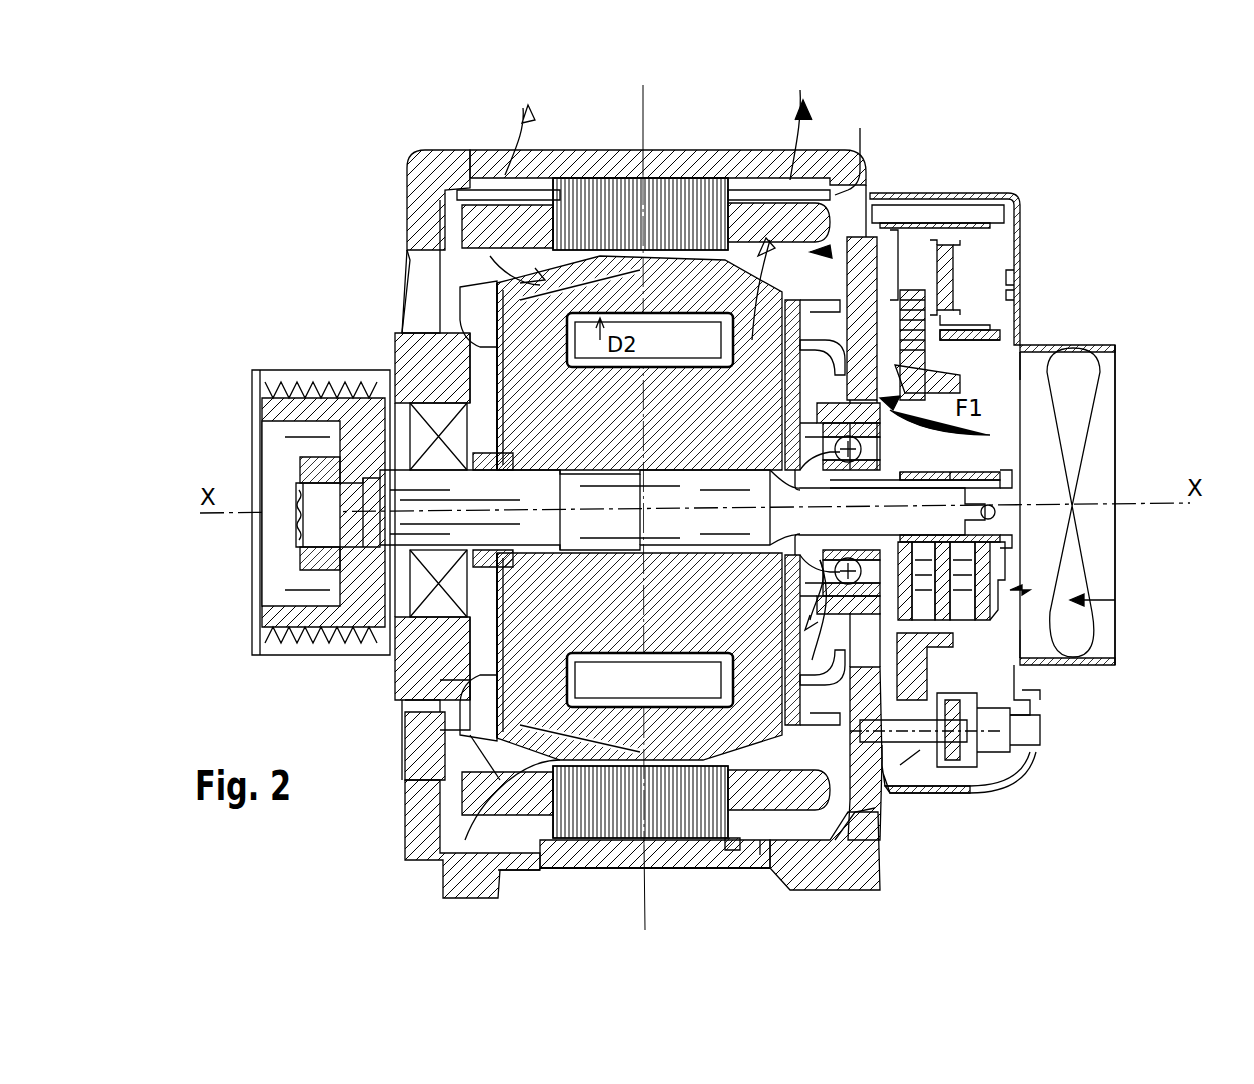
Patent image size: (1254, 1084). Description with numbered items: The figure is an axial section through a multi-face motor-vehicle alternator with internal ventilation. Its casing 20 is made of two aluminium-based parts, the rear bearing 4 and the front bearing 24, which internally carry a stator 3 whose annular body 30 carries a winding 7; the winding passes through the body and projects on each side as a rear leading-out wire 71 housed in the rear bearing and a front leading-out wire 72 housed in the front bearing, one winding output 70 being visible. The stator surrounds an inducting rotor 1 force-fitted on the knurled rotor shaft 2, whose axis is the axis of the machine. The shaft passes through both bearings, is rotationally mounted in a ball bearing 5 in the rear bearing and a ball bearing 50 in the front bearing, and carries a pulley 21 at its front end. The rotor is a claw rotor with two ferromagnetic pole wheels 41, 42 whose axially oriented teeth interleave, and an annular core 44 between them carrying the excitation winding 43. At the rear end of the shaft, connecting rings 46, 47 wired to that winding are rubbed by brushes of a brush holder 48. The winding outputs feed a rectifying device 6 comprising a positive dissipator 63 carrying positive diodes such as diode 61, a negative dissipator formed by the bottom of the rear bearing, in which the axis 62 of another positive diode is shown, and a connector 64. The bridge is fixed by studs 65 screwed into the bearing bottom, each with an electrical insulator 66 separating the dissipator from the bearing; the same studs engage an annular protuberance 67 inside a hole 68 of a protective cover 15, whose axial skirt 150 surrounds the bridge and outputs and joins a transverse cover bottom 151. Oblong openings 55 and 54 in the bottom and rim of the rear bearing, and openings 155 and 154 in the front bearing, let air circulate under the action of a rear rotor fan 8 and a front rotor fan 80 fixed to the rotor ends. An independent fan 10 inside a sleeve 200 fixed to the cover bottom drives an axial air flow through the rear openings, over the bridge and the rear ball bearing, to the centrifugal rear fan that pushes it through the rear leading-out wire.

The inducting rotor 1 is at (500, 818).
The rotor shaft 2 is at (378, 498).
The stator 3 is at (440, 836).
The rear bearing 4 is at (852, 856).
The ball bearing 5 is at (886, 458).
The rectifying device 6 is at (965, 255).
The winding 7 is at (851, 147).
The rear rotor fan 8 is at (812, 345).
The independent fan 10 is at (1110, 580).
The protective cover 15 is at (1030, 772).
The casing 20 is at (395, 189).
The pulley 21 is at (262, 372).
The front bearing 24 is at (405, 722).
The stator body 30 is at (688, 850).
The pole wheel 41 is at (870, 834).
The pole wheel 42 is at (553, 848).
The excitation winding 43 is at (668, 332).
The core 44 is at (733, 853).
The connecting ring 46 is at (925, 474).
The connecting ring 47 is at (992, 472).
The brush holder 48 is at (1000, 612).
The ball bearing 50 is at (412, 420).
The air passage opening 54 is at (797, 178).
The air passage opening 55 is at (925, 378).
The positive diode 61 is at (1015, 312).
The axis of a positive diode 62 is at (884, 285).
The positive dissipator 63 is at (935, 668).
The connector 64 is at (965, 290).
The stud 65 is at (1040, 722).
The electrical insulator 66 is at (942, 784).
The annular protuberance 67 is at (1040, 745).
The hole 68 is at (1036, 700).
The winding output 70 is at (982, 205).
The rear leading-out wire 71 is at (770, 862).
The front leading-out wire 72 is at (520, 853).
The front rotor fan 80 is at (462, 700).
The skirt 150 is at (890, 193).
The cover bottom 151 is at (1030, 215).
The air passage opening 154 is at (483, 150).
The air passage opening 155 is at (408, 262).
The sleeve 200 is at (1108, 338).